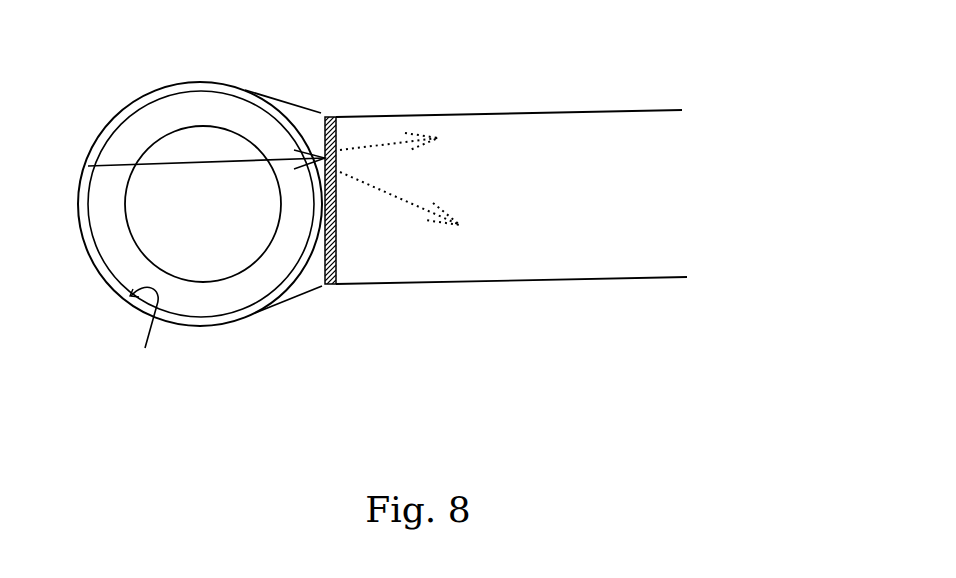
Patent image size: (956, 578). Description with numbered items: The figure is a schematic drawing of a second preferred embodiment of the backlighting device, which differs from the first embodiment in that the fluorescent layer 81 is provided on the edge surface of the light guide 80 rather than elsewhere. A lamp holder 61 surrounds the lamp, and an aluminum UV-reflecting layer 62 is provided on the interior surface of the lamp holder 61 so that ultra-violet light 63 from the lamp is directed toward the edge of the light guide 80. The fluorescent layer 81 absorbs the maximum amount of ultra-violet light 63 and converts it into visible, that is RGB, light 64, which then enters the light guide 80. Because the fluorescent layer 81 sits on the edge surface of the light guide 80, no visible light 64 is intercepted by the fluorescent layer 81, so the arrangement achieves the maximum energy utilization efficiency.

The lamp holder 61 is at (200, 232).
The aluminum UV-reflecting layer 62 is at (140, 335).
The ultra-violet light 63 is at (88, 168).
The visible light 64 is at (423, 188).
The light guide 80 is at (553, 213).
The fluorescent layer 81 is at (328, 115).